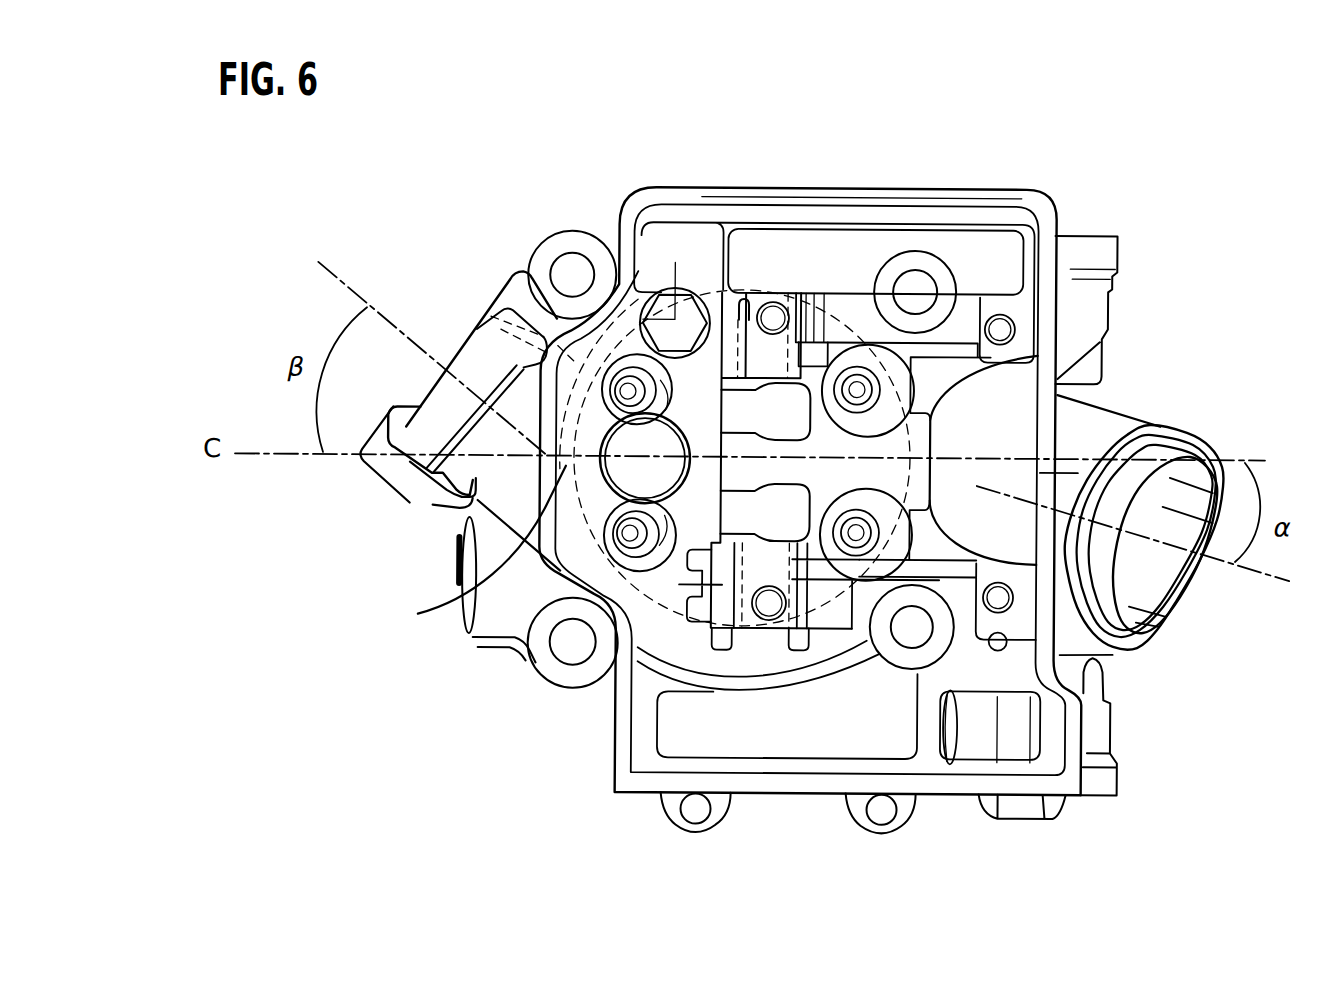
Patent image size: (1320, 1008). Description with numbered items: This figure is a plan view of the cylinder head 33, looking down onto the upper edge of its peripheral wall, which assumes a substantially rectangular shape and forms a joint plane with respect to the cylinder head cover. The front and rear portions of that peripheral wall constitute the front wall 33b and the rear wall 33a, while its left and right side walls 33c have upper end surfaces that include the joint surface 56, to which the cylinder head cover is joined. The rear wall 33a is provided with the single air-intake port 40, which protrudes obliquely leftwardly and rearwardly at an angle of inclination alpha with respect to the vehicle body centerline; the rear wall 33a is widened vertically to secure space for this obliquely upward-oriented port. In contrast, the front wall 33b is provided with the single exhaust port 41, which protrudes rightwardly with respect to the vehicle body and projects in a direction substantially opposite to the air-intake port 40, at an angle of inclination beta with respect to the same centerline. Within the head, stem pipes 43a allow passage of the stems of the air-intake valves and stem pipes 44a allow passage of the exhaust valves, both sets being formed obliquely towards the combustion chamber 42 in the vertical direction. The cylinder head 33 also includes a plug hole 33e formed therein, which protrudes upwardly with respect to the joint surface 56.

The cylinder head 33 is at (567, 169).
The rear wall 33a is at (1058, 420).
The front wall 33b is at (537, 484).
The side walls 33c is at (931, 181).
The plug hole 33e is at (468, 605).
The air-intake port 40 is at (1167, 581).
The exhaust port 41 is at (464, 361).
The combustion chamber 42 is at (651, 613).
The stem pipes 43a is at (854, 378).
The stem pipes 44a is at (606, 377).
The joint surface 56 is at (970, 200).